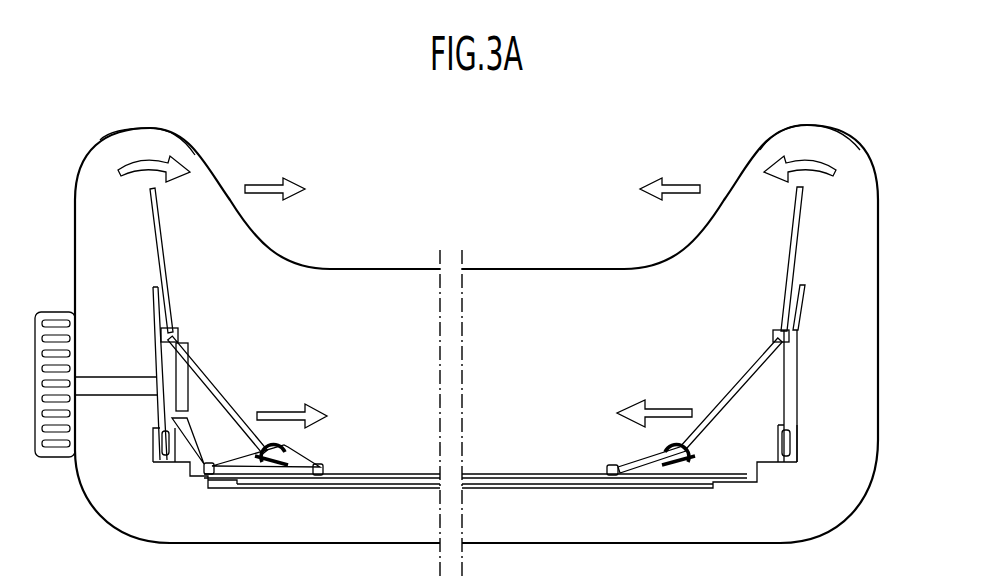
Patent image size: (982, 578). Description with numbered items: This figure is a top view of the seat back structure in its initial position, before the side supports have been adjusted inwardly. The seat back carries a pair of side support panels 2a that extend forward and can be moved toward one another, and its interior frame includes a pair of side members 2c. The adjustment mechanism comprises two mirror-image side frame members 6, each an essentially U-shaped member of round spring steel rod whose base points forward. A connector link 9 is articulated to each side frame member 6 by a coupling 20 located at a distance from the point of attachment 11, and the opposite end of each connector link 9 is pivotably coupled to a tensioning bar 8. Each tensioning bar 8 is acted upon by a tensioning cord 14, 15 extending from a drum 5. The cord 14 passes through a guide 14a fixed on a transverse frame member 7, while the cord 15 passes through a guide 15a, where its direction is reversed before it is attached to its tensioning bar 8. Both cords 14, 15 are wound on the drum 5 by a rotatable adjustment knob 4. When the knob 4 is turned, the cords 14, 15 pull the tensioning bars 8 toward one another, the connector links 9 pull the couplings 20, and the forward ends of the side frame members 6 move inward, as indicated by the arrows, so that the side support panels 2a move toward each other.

The side support panel 2a is at (163, 127).
The side member 2c is at (157, 318).
The adjustment knob 4 is at (46, 460).
The drum 5 is at (183, 386).
The side frame member 6 is at (166, 234).
The transverse frame member 7 is at (660, 488).
The tensioning bar 8 is at (262, 458).
The connector link 9 is at (210, 395).
The point of attachment 11 is at (153, 457).
The tensioning cord 14 is at (175, 428).
The guide 14a is at (610, 465).
The tensioning cord 15 is at (308, 456).
The guide 15a is at (209, 478).
The coupling 20 is at (176, 330).